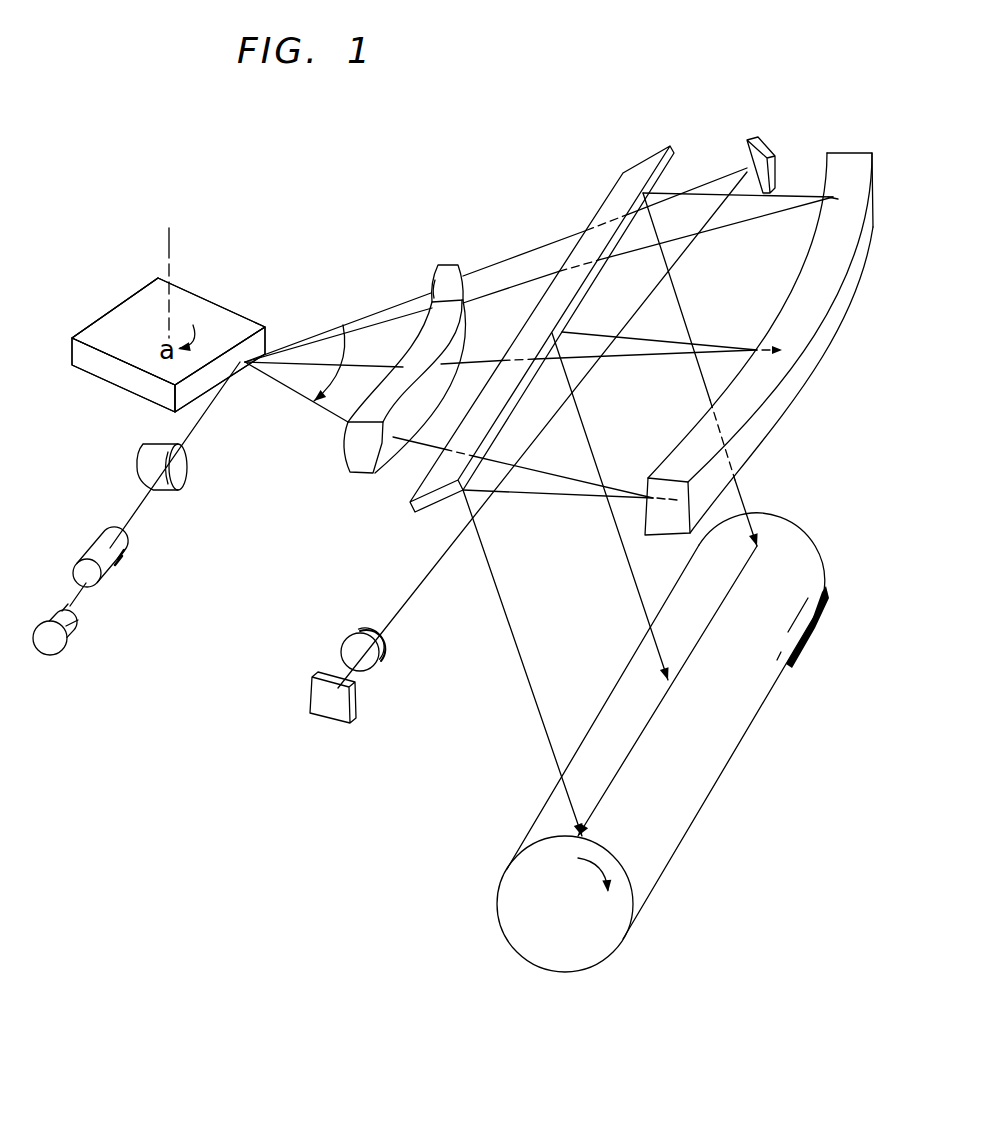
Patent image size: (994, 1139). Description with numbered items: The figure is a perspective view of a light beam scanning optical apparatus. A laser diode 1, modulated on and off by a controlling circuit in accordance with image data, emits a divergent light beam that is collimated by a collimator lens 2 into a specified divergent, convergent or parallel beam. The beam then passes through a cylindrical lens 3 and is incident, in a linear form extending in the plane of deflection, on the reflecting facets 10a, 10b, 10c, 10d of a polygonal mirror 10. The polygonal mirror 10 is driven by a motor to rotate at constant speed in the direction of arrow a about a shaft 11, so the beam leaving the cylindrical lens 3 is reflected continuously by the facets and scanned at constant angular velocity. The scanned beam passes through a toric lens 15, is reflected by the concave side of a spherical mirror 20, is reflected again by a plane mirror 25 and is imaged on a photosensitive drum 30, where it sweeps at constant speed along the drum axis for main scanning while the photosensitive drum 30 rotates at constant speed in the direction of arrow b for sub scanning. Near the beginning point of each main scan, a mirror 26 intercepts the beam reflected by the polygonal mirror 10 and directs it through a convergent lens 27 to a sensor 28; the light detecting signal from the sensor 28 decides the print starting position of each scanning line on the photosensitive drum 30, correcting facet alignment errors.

The laser diode 1 is at (72, 638).
The collimator lens 2 is at (117, 567).
The cylindrical lens 3 is at (167, 480).
The polygonal mirror 10 is at (243, 313).
The reflecting facet of polygon mirror 10a is at (203, 380).
The reflecting facet of polygon mirror 10b is at (188, 288).
The reflecting facet of polygon mirror 10c is at (121, 299).
The reflecting facet of polygon mirror 10d is at (102, 381).
The shaft 11 is at (170, 252).
The toric lens 15 is at (453, 264).
The spherical mirror 20 is at (678, 450).
The plane mirror 25 is at (420, 512).
The mirror 26 is at (748, 152).
The convergent lens 27 is at (378, 659).
The sensor 28 is at (342, 725).
The photosensitive drum 30 is at (538, 818).